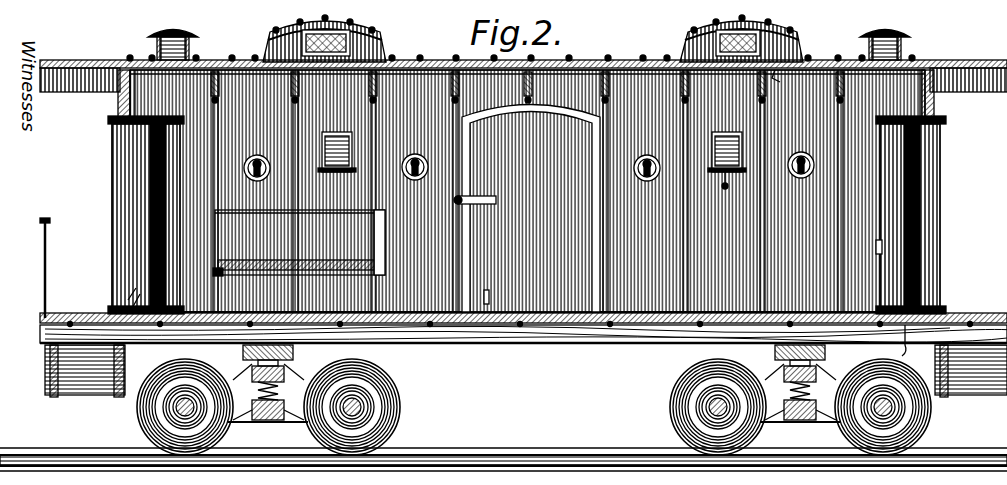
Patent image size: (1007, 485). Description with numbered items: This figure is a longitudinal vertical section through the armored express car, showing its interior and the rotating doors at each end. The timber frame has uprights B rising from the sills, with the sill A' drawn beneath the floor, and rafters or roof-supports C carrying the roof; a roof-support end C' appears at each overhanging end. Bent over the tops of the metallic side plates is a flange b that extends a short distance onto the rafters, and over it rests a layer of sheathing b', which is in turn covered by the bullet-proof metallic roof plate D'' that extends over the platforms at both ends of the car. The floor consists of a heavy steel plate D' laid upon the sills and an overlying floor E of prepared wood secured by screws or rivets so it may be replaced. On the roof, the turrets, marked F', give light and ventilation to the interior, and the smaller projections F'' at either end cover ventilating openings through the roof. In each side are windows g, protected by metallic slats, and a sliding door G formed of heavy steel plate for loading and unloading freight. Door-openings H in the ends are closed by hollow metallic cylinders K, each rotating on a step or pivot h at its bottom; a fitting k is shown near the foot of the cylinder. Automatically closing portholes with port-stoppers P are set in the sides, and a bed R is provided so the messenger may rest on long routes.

The car sill frame A' is at (523, 360).
The uprights B is at (216, 186).
The rafters or roof-supports C is at (527, 191).
The roof end overhang C' is at (66, 93).
The steel floor-plate D' is at (504, 327).
The metallic roof plate D'' is at (523, 52).
The floor E is at (96, 294).
The cupola ventilator F' is at (544, 33).
The ventilator stack F'' is at (521, 33).
The sliding door G is at (527, 209).
The door-opening H is at (936, 170).
The cylindrical door K is at (116, 186).
The port-stopper P is at (258, 182).
The bed R is at (299, 243).
The flange b is at (885, 244).
The sheathing b' is at (787, 81).
The windows g is at (350, 173).
The step or pivot h is at (905, 344).
The brace k is at (134, 298).